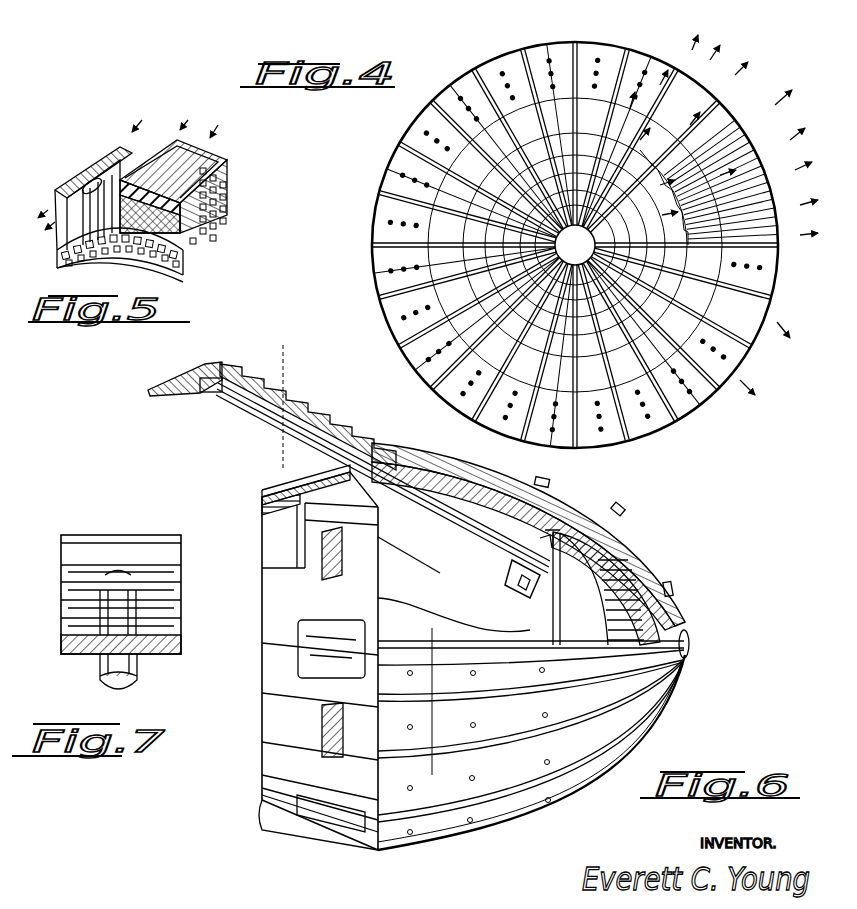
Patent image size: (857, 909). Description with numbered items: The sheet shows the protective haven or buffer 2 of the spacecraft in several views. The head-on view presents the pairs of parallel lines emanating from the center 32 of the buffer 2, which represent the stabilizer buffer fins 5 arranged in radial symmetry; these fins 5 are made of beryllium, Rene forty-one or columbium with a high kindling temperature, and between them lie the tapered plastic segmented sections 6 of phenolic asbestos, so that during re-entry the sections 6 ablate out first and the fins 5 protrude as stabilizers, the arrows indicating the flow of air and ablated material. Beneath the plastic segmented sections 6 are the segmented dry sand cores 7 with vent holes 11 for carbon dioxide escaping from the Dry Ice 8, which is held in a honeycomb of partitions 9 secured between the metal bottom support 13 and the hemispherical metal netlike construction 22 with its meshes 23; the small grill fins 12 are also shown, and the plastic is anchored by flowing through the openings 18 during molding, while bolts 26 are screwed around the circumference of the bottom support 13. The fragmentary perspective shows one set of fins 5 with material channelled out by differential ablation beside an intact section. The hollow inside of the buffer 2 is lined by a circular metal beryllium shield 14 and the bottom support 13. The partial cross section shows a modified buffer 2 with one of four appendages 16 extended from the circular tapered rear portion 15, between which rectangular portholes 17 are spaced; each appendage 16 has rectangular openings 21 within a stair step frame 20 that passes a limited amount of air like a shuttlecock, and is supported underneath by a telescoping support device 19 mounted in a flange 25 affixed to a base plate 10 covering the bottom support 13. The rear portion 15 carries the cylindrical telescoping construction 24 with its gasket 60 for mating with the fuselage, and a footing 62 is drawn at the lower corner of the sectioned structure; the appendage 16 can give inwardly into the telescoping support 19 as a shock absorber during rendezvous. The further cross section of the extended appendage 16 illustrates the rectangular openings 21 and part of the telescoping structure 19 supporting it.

In FIG. 4, the haven or buffer 2 is at (718, 410).
In FIG. 6, the haven or buffer 2 is at (708, 688).
In FIG. 4, the stabilizer buffer fins 5 is at (530, 50).
In FIG. 5, the stabilizer buffer fins 5 is at (128, 160).
In FIG. 6, the stabilizer buffer fins 5 is at (428, 632).
In FIG. 4, the plastic segmented sections 6 is at (636, 75).
In FIG. 5, the plastic segmented sections 6 is at (200, 155).
In FIG. 6, the plastic segmented sections 6 is at (516, 771).
In FIG. 4, the segmented dry sand cores 7 is at (750, 150).
In FIG. 5, the segmented dry sand cores 7 is at (180, 255).
In FIG. 6, the segmented dry sand cores 7 is at (287, 352).
In FIG. 6, the Dry Ice 8 is at (650, 565).
In FIG. 6, the partitions 9 is at (640, 540).
In FIG. 6, the base plate 10 is at (558, 598).
In FIG. 4, the vent holes 11 is at (478, 112).
In FIG. 6, the vent holes 11 is at (417, 787).
In FIG. 4, the grill fins 12 is at (735, 112).
In FIG. 5, the grill fins 12 is at (95, 182).
In FIG. 6, the grill fins 12 is at (502, 478).
In FIG. 6, the metal bottom support 13 is at (598, 612).
In FIG. 6, the circular metal beryllium shield 14 is at (545, 535).
In FIG. 6, the tapered rear portion 15 is at (278, 810).
In FIG. 7, the appendages 16 is at (115, 535).
In FIG. 6, the appendages 16 is at (178, 372).
In FIG. 6, the rectangular portholes 17 is at (330, 580).
In FIG. 5, the openings 18 is at (96, 178).
In FIG. 6, the openings 18 is at (548, 488).
In FIG. 7, the telescoping support device 19 is at (140, 670).
In FIG. 6, the telescoping support device 19 is at (225, 398).
In FIG. 7, the stair step frame 20 is at (182, 565).
In FIG. 6, the stair step frame 20 is at (268, 406).
In FIG. 7, the rectangular openings 21 is at (78, 596).
In FIG. 6, the rectangular openings 21 is at (310, 428).
In FIG. 5, the metal netlike construction 22 is at (112, 264).
In FIG. 5, the meshes 23 is at (210, 225).
In FIG. 6, the cylindrical telescoping construction 24 is at (258, 500).
In FIG. 6, the flange 25 is at (510, 585).
In FIG. 6, the bolts 26 is at (585, 520).
In FIG. 6, the center 32 is at (690, 638).
In FIG. 6, the gasket 60 is at (305, 516).
In FIG. 6, the footing 62 is at (380, 860).